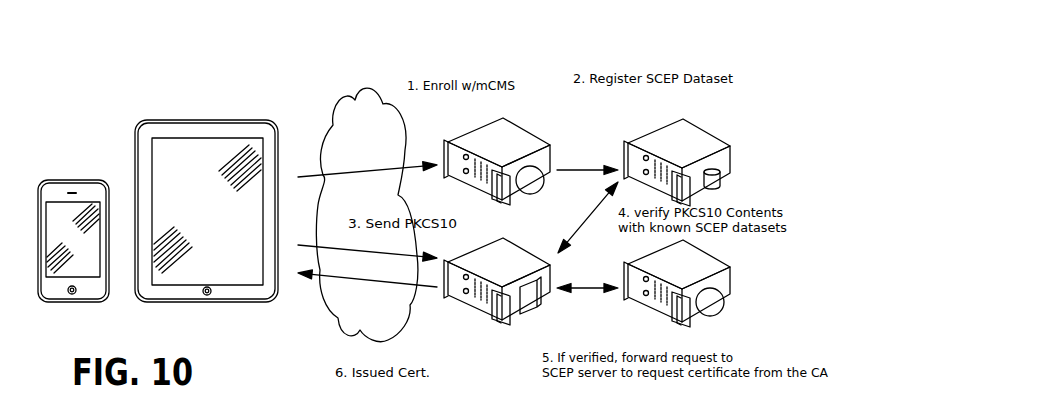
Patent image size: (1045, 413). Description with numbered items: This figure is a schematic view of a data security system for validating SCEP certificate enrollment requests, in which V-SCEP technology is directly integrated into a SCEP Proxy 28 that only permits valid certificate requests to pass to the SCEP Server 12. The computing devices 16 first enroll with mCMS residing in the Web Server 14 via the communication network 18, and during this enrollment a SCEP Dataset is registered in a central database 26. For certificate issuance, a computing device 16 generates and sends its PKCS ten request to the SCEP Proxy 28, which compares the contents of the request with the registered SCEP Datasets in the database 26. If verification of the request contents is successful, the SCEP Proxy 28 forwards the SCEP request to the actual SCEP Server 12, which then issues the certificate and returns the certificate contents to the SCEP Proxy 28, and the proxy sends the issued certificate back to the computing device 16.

The computing device 16 is at (72, 178).
The communication network 18 is at (368, 88).
The Web Server 14 is at (550, 150).
The central database 26 is at (730, 153).
The SCEP Proxy 28 is at (540, 255).
The SCEP Server 12 is at (732, 273).